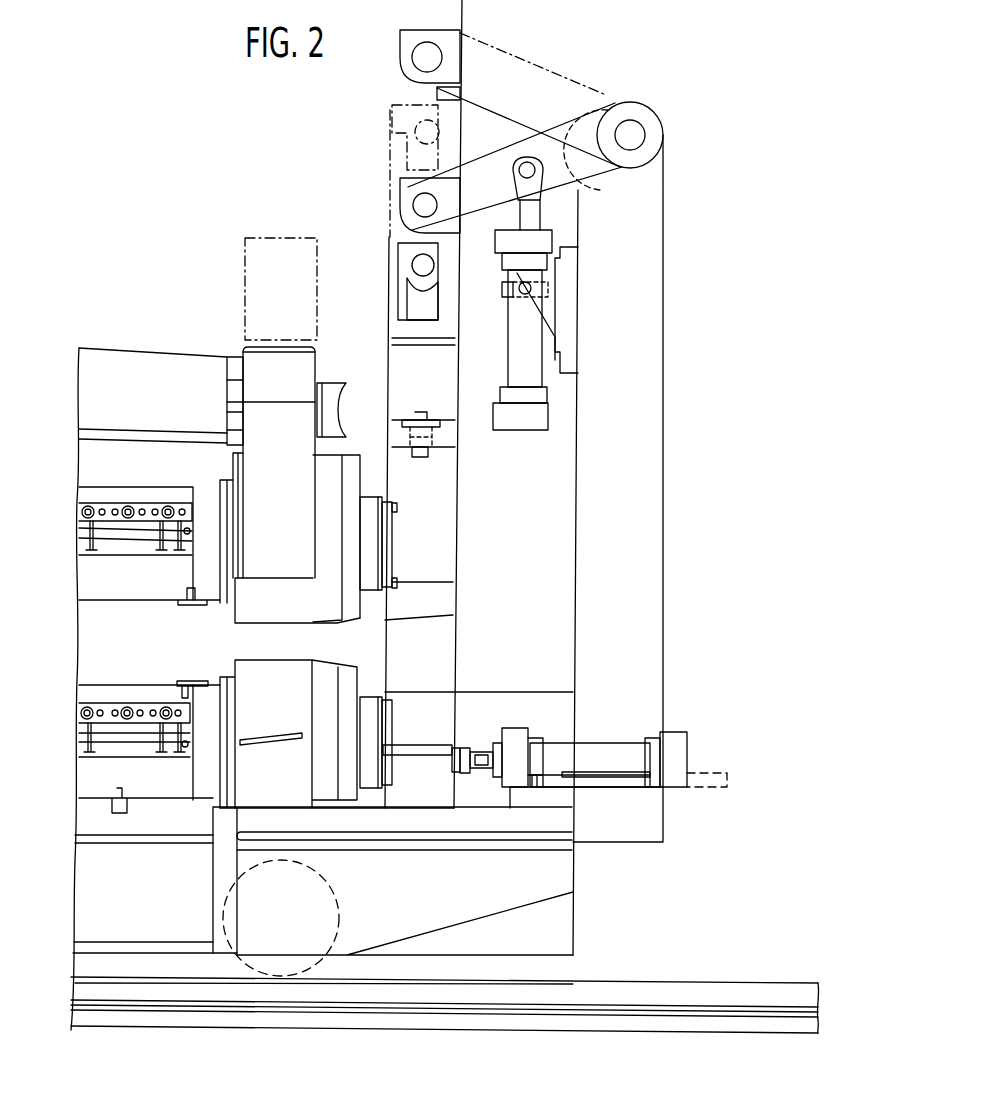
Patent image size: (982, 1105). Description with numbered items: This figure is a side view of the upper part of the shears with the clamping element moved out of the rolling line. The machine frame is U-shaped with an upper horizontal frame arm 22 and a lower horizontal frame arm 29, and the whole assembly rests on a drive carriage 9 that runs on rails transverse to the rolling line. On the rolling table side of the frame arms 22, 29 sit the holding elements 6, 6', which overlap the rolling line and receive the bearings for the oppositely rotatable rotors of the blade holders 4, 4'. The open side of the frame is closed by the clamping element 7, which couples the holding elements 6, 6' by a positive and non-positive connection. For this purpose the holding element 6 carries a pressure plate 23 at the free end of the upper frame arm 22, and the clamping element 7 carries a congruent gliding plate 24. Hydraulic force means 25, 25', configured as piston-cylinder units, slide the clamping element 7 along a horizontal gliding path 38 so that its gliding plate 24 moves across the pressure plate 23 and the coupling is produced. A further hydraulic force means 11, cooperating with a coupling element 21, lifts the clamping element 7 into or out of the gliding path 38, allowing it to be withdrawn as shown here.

The blade holder 4 is at (109, 555).
The blade holder 4' is at (122, 748).
The holding element 6 is at (298, 534).
The holding element 6' is at (327, 717).
The clamping element 7 is at (282, 278).
The drive carriage 9 is at (298, 919).
The hydraulic force means 11 is at (522, 348).
The coupling element 21 is at (415, 127).
The horizontal frame arm 22 is at (119, 396).
The pressure plate 23 is at (277, 338).
The gliding plate 24 is at (432, 351).
The force means 25 is at (620, 742).
The force means 25' is at (526, 739).
The horizontal frame arm 29 is at (152, 911).
The gliding path 38 is at (414, 839).